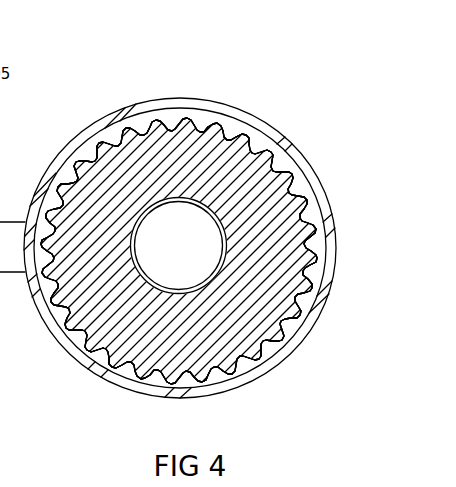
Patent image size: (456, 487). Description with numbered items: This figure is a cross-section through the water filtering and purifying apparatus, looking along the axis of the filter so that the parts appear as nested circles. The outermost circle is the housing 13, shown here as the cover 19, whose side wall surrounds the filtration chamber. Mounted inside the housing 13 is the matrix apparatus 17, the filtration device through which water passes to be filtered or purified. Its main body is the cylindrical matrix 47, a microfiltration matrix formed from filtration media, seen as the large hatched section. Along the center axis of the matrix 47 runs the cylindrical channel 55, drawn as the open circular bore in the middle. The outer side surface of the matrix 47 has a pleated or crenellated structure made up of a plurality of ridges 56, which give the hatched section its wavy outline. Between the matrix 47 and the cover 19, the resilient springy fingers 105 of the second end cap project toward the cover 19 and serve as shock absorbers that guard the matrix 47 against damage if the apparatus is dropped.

The housing 13 is at (102, 377).
The cover 19 is at (84, 133).
The matrix 47 is at (237, 163).
The matrix apparatus 17 is at (238, 334).
The ridges 56 is at (227, 124).
The resilient springy fingers 105 is at (152, 116).
The cylindrical channel 55 is at (166, 257).